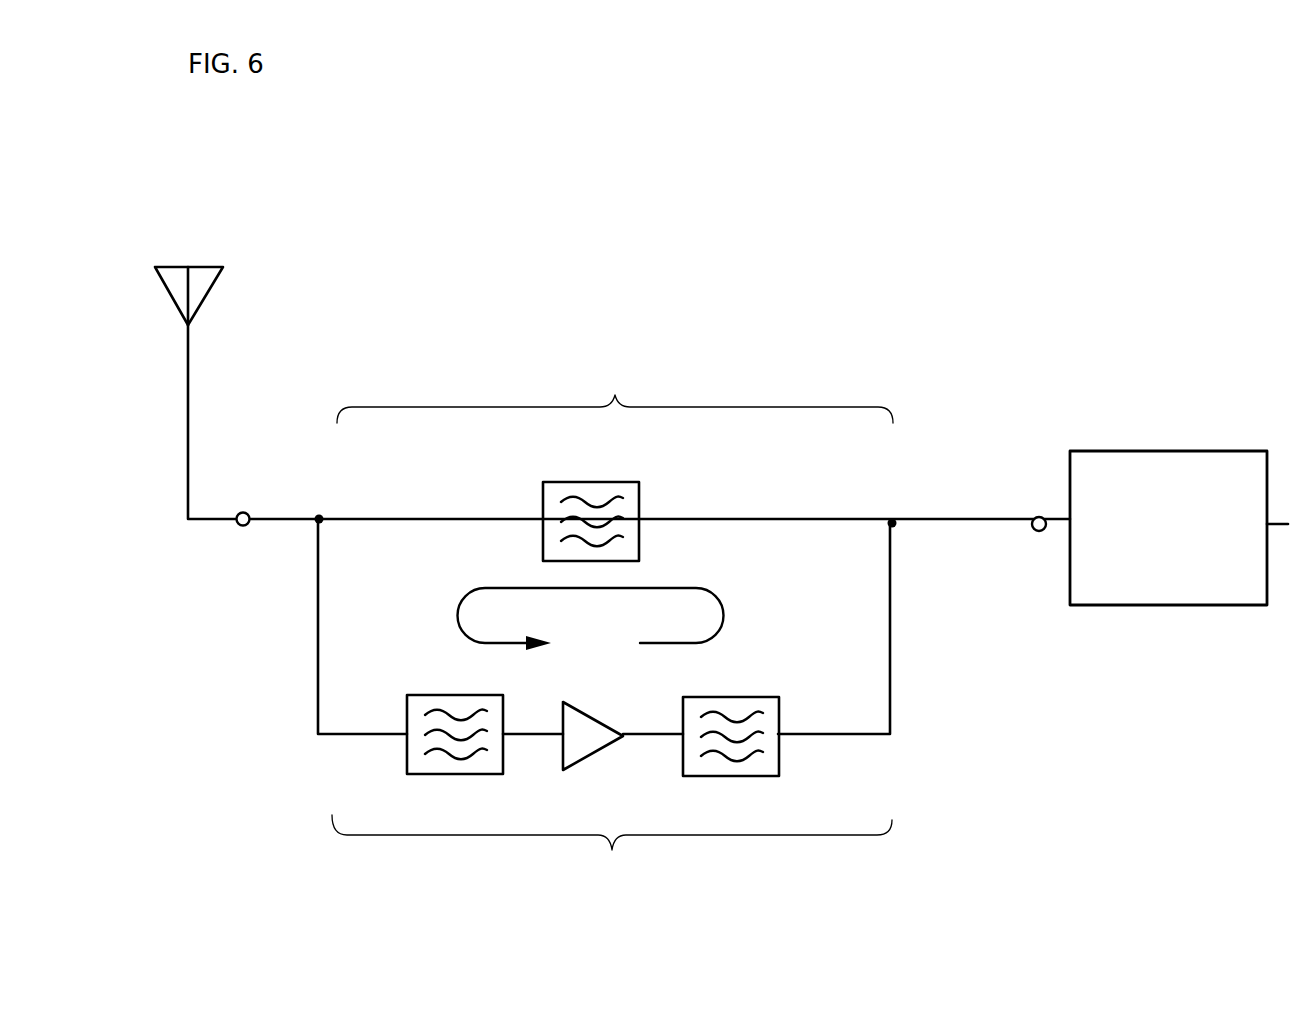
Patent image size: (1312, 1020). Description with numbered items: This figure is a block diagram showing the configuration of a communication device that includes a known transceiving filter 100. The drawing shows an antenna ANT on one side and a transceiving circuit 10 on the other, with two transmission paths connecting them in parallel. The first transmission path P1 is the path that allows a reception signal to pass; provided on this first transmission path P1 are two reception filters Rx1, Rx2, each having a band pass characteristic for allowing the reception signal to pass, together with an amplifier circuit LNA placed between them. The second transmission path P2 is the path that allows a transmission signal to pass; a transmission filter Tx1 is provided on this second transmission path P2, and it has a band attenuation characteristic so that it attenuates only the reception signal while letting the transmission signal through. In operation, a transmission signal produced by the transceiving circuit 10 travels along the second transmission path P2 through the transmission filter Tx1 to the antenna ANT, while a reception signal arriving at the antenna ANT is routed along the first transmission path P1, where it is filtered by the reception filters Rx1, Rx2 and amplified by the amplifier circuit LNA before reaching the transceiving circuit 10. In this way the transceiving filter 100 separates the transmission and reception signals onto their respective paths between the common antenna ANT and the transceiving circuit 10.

The transceiving filter 100 is at (770, 314).
The transceiving circuit 10 is at (1183, 451).
The antenna ANT is at (222, 265).
The first transmission path P1 is at (612, 852).
The second transmission path P2 is at (615, 390).
The transmission filter Tx1 is at (591, 506).
The reception filter Rx1 is at (455, 719).
The reception filter Rx2 is at (731, 720).
The amplifier circuit LNA is at (593, 717).